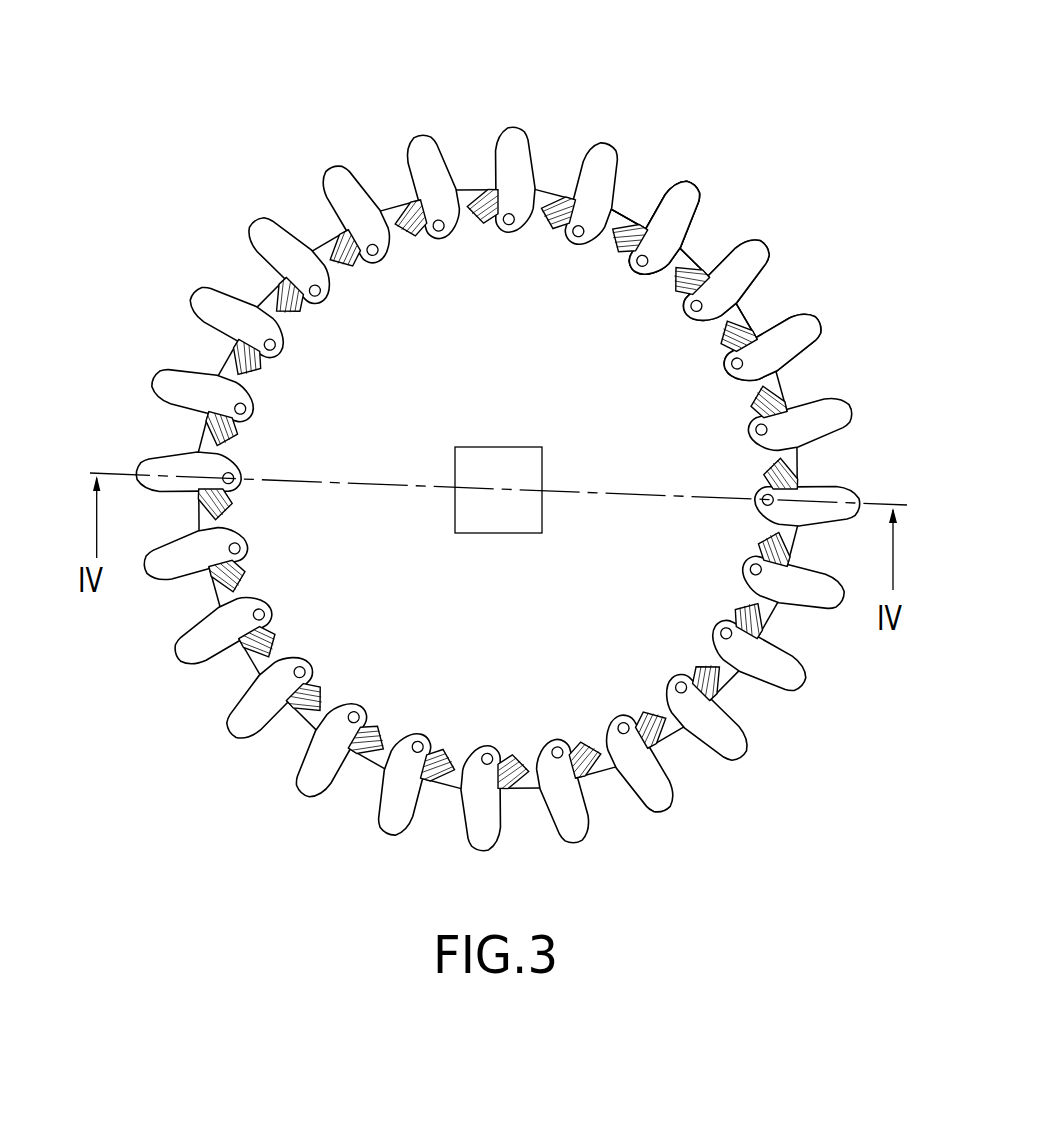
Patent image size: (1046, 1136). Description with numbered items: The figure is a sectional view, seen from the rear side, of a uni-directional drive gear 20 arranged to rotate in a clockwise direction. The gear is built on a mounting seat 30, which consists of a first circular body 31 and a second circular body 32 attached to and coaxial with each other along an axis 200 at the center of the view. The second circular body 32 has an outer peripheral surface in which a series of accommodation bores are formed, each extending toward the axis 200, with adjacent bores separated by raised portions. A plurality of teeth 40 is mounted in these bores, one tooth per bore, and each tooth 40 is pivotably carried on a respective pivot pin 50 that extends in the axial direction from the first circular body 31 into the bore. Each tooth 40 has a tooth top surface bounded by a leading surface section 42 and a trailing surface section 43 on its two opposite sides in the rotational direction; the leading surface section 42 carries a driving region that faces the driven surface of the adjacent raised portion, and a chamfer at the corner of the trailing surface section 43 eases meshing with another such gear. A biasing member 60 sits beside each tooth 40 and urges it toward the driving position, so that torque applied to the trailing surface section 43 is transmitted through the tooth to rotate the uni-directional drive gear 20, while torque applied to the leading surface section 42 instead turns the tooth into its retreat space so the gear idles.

The uni-directional drive gear 20 is at (612, 113).
The mounting seat 30 is at (463, 180).
The first circular body 31 is at (562, 197).
The second circular body 32 is at (540, 193).
The teeth 40 is at (690, 173).
The leading surface section 42 is at (683, 253).
The trailing surface section 43 is at (672, 187).
The pivot pins 50 is at (700, 257).
The biasing members 60 is at (630, 247).
The axis 200 is at (498, 489).